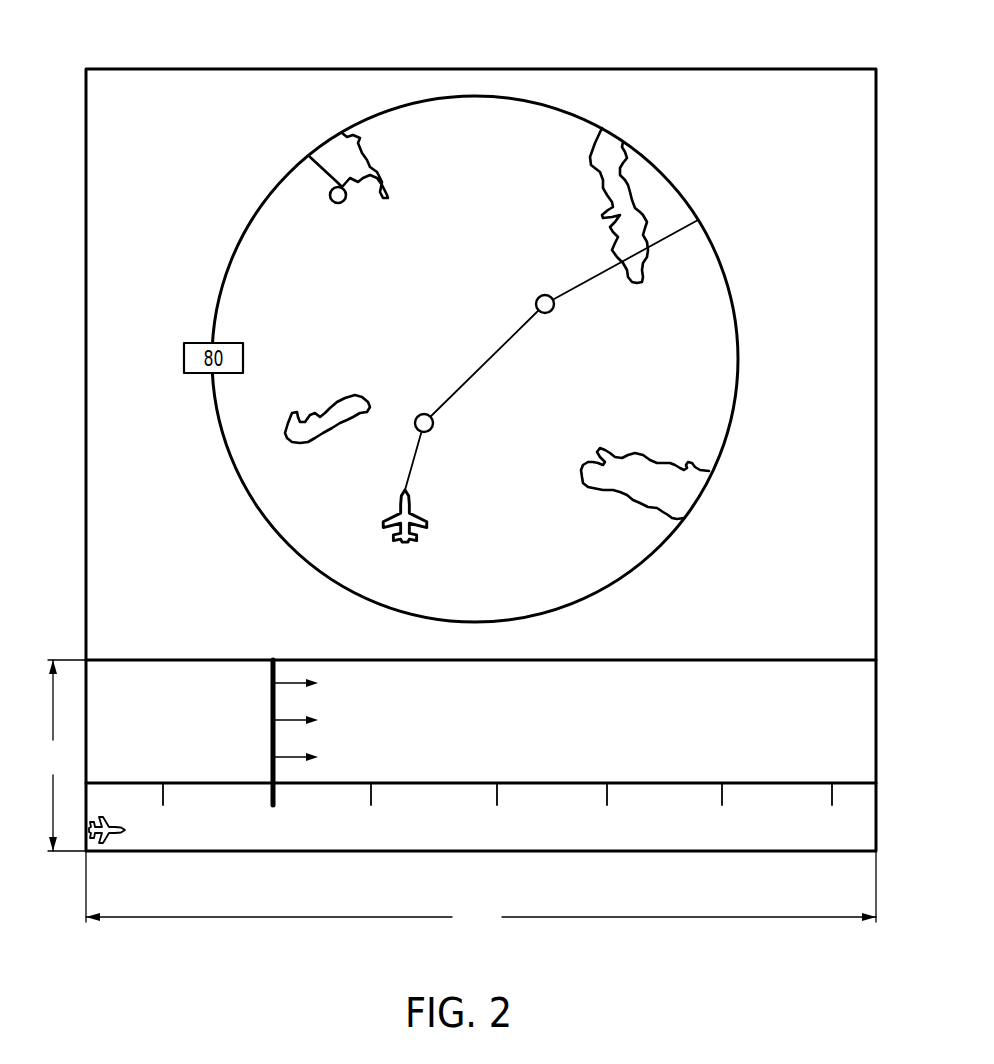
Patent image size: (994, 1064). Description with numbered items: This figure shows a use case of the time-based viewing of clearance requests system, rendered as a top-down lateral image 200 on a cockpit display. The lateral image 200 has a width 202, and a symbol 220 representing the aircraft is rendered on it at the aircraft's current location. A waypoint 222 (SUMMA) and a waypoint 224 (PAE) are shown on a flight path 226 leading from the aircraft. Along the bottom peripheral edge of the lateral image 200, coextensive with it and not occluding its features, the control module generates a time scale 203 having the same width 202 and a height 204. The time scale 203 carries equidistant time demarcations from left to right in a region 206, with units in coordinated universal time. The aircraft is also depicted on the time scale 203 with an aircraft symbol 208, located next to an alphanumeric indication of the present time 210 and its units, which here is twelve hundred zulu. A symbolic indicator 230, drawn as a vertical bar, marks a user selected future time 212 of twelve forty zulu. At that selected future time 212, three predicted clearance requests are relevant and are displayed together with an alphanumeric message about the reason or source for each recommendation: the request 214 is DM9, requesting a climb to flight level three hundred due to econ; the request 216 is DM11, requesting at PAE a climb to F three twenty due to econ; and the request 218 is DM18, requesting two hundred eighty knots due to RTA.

The lateral image 200 is at (800, 78).
The width 202 is at (481, 891).
The time scale 203 is at (179, 721).
The height 204 is at (57, 755).
The region 206 is at (882, 783).
The aircraft symbol 208 is at (100, 845).
The present time 210 is at (164, 836).
The selected future time 212 is at (272, 836).
The predicted clearance request DM9 214 is at (713, 684).
The predicted clearance request DM11 216 is at (781, 721).
The predicted clearance request DM18 218 is at (631, 758).
The symbol 220 is at (420, 517).
The waypoint 222 is at (420, 414).
The waypoint 224 is at (543, 295).
The flight path 226 is at (487, 363).
The symbolic indicator 230 is at (270, 673).